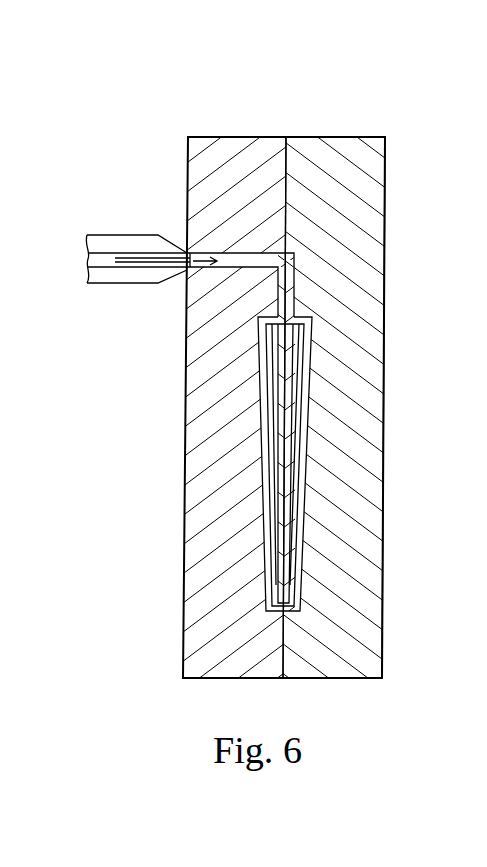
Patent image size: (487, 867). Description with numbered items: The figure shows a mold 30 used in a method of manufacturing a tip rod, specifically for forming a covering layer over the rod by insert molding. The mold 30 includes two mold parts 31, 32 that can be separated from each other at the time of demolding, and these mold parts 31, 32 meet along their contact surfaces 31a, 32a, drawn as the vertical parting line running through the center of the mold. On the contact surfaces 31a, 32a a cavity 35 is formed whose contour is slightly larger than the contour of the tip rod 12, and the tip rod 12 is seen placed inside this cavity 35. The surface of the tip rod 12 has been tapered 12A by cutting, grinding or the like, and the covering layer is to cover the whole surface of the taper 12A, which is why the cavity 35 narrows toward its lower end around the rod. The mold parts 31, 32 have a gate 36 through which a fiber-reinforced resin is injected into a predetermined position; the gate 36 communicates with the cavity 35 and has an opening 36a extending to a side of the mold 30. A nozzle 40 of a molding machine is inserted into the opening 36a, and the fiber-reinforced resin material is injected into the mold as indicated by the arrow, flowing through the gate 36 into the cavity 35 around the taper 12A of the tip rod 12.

The mold 30 is at (373, 100).
The mold part 31 is at (212, 150).
The mold part 32 is at (373, 174).
The contact surface 31a is at (287, 207).
The contact surface 32a is at (286, 190).
The cavity 35 is at (313, 318).
The gate 36 is at (289, 264).
The opening 36a is at (186, 262).
The tip rod 12 is at (285, 433).
The taper 12A is at (298, 493).
The nozzle 40 is at (105, 242).